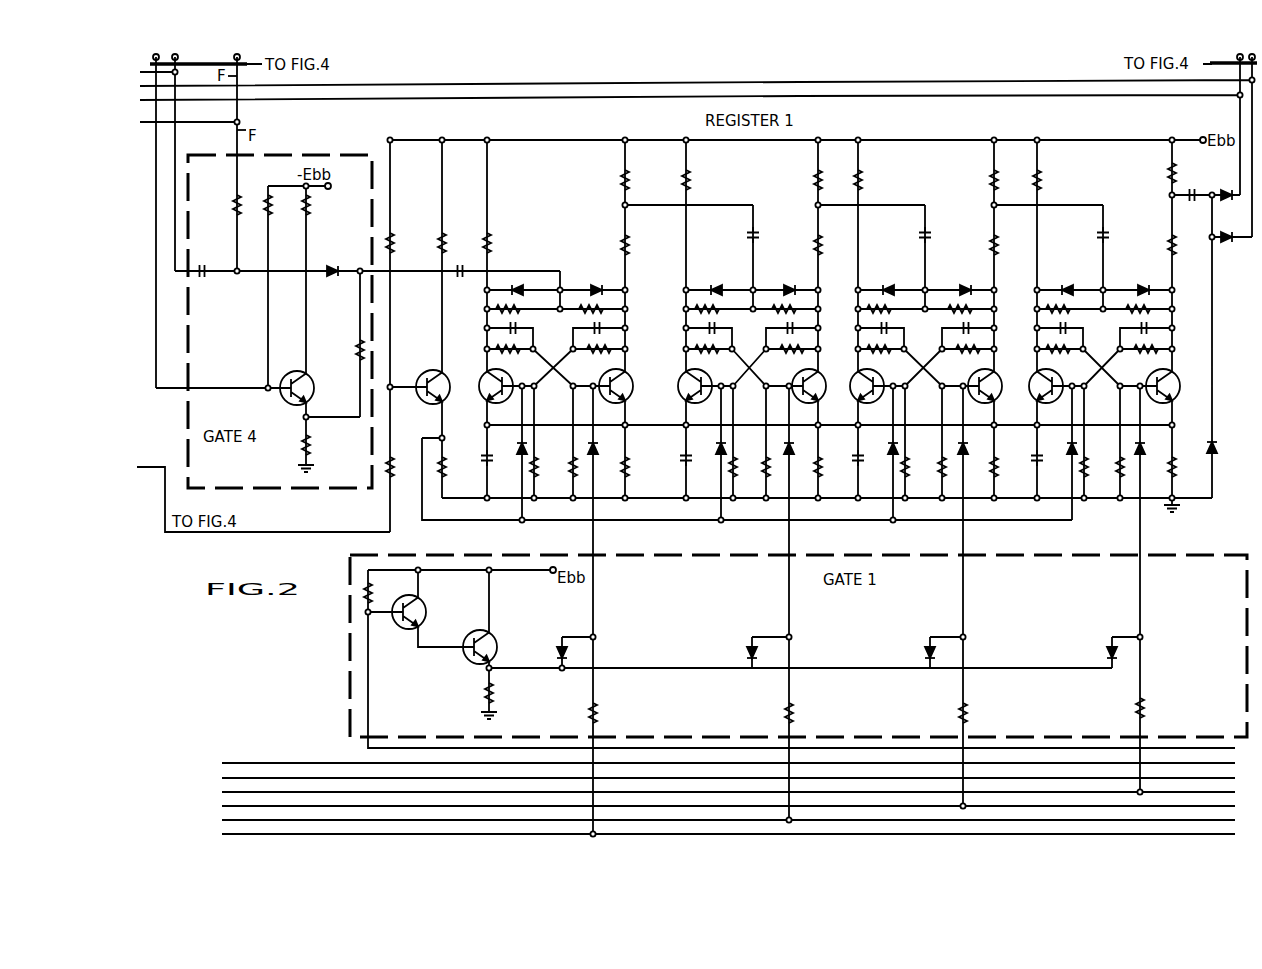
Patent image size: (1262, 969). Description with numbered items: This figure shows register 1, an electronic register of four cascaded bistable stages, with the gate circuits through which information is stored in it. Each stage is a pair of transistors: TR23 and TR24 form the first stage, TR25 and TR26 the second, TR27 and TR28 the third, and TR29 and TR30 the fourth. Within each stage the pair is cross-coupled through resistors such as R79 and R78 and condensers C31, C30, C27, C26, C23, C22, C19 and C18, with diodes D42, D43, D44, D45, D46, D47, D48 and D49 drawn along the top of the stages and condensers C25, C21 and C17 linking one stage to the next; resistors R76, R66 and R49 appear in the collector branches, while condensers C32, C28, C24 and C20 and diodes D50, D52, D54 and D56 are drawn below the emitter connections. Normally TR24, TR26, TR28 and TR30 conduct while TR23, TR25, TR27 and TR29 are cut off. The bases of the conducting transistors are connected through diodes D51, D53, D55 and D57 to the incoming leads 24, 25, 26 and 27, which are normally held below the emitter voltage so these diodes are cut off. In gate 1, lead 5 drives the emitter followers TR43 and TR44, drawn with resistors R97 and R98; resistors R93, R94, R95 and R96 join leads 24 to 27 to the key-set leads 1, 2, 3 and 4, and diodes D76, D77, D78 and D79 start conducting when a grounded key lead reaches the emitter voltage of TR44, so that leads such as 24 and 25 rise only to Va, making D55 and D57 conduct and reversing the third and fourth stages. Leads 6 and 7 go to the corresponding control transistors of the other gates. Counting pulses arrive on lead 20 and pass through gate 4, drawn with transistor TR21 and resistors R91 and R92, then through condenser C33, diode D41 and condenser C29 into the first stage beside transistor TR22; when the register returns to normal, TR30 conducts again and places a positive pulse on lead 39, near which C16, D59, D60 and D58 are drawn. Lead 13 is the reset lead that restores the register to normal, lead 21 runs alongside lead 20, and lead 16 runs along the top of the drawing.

The conductor from FIG. 4 16 is at (826, 82).
The lead 39 is at (876, 96).
The lead 20 is at (175, 149).
The input conductor 21 is at (156, 170).
The lead 13 is at (356, 529).
The incoming lead 27 is at (593, 543).
The incoming lead 26 is at (789, 543).
The incoming lead 25 is at (963, 543).
The incoming lead 24 is at (1140, 543).
The lead 5 is at (368, 723).
The lead 6 is at (728, 756).
The lead 7 is at (728, 771).
The lead 1 is at (728, 716).
The lead 2 is at (728, 723).
The lead 3 is at (728, 730).
The lead 4 is at (728, 737).
The transistor TR21 is at (308, 374).
The transistor TR22 is at (440, 406).
The transistor TR23 is at (483, 398).
The transistor TR24 is at (628, 376).
The transistor TR25 is at (680, 402).
The transistor TR26 is at (821, 376).
The transistor TR27 is at (870, 402).
The transistor TR28 is at (997, 375).
The transistor TR29 is at (1032, 399).
The transistor TR30 is at (1176, 376).
The emitter follower transistor TR43 is at (422, 612).
The emitter follower transistor TR44 is at (497, 636).
The resistor R49 is at (1168, 249).
The resistor R66 is at (823, 243).
The resistor R76 is at (606, 244).
The resistor R78 is at (604, 305).
The resistor R79 is at (512, 310).
The resistor R91 is at (356, 346).
The resistor R92 is at (310, 449).
The resistor R93 is at (1132, 710).
The resistor R94 is at (955, 712).
The resistor R95 is at (781, 712).
The resistor R96 is at (585, 712).
The resistor R97 is at (388, 589).
The resistor R98 is at (482, 698).
The capacitor C16 is at (1190, 189).
The capacitor C17 is at (1109, 236).
The capacitor C18 is at (1137, 332).
The capacitor C19 is at (1050, 332).
The capacitor C20 is at (1036, 458).
The capacitor C21 is at (922, 232).
The capacitor C22 is at (959, 332).
The capacitor C23 is at (876, 332).
The capacitor C24 is at (855, 455).
The capacitor C25 is at (755, 233).
The capacitor C26 is at (786, 332).
The capacitor C27 is at (696, 331).
The capacitor C28 is at (687, 454).
The condenser C29 is at (464, 276).
The capacitor C30 is at (591, 335).
The capacitor C31 is at (512, 331).
The capacitor C32 is at (482, 457).
The condenser C33 is at (212, 259).
The diode D41 is at (346, 268).
The diode D42 is at (547, 271).
The diode D43 is at (615, 285).
The diode D44 is at (736, 283).
The diode D45 is at (803, 283).
The diode D46 is at (906, 283).
The diode D47 is at (973, 283).
The diode D48 is at (1081, 283).
The diode D49 is at (1153, 283).
The diode D50 is at (530, 449).
The diode D51 is at (600, 448).
The diode D52 is at (729, 449).
The diode D53 is at (796, 448).
The diode D54 is at (901, 449).
The diode D55 is at (970, 448).
The diode D56 is at (1062, 447).
The diode D57 is at (1149, 448).
The diode D58 is at (1217, 445).
The diode D59 is at (1233, 186).
The diode D60 is at (1230, 243).
The diode D76 is at (556, 654).
The diode D77 is at (747, 653).
The diode D78 is at (927, 653).
The diode D79 is at (1107, 653).